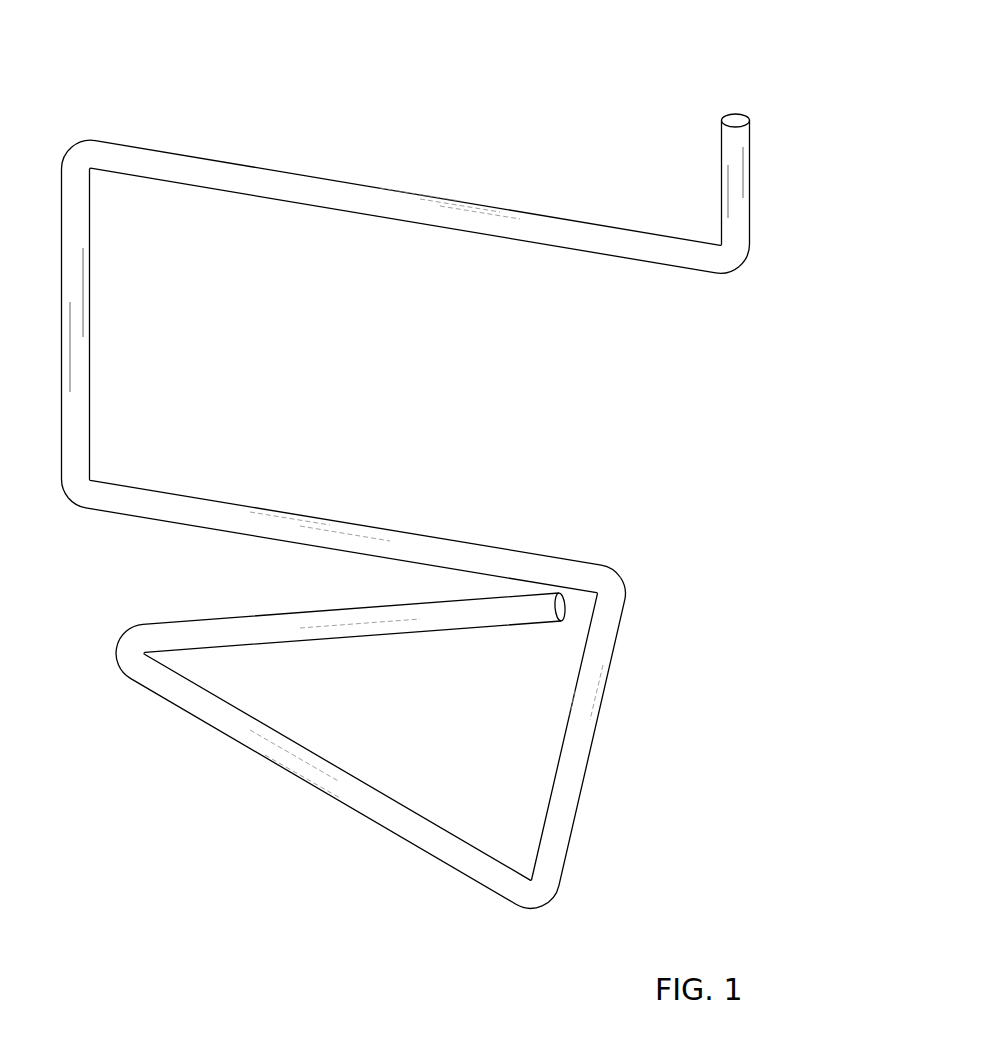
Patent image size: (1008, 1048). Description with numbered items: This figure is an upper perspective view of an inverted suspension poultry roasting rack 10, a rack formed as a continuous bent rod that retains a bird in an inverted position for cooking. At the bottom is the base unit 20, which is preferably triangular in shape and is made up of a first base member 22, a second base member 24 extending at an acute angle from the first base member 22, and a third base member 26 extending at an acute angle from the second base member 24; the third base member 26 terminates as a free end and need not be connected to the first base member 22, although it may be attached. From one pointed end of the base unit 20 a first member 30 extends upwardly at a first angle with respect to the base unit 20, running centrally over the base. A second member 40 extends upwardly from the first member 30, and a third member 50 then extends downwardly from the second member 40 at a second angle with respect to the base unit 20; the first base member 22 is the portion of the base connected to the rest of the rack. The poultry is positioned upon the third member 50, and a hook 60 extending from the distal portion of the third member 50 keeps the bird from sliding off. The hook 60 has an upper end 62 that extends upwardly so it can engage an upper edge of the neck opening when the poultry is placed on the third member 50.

The inverted suspension poultry roasting rack 10 is at (560, 104).
The base unit 20 is at (388, 833).
The first base member 22 is at (597, 726).
The second base member 24 is at (258, 755).
The third base member 26 is at (376, 645).
The first member 30 is at (300, 518).
The second member 40 is at (88, 291).
The third member 50 is at (425, 223).
The hook 60 is at (722, 189).
The upper end 62 is at (722, 117).